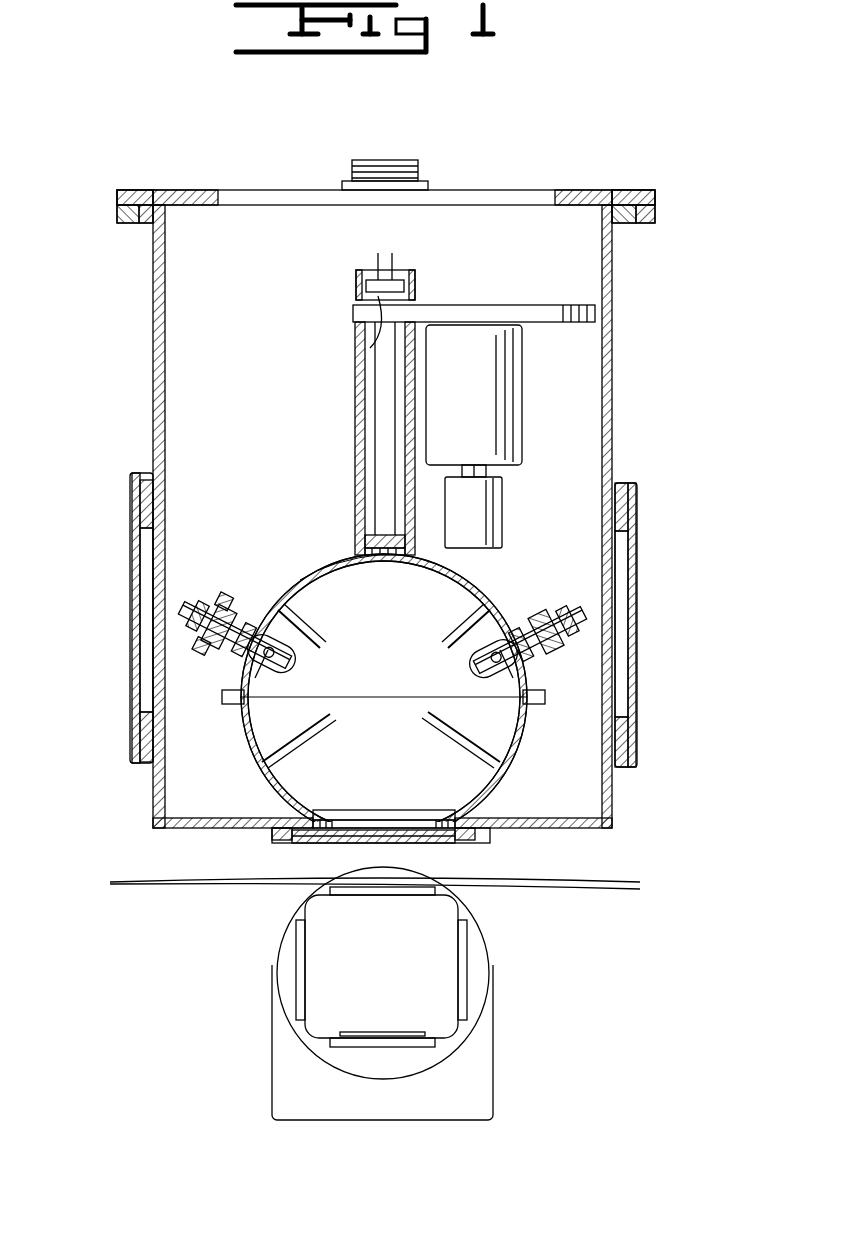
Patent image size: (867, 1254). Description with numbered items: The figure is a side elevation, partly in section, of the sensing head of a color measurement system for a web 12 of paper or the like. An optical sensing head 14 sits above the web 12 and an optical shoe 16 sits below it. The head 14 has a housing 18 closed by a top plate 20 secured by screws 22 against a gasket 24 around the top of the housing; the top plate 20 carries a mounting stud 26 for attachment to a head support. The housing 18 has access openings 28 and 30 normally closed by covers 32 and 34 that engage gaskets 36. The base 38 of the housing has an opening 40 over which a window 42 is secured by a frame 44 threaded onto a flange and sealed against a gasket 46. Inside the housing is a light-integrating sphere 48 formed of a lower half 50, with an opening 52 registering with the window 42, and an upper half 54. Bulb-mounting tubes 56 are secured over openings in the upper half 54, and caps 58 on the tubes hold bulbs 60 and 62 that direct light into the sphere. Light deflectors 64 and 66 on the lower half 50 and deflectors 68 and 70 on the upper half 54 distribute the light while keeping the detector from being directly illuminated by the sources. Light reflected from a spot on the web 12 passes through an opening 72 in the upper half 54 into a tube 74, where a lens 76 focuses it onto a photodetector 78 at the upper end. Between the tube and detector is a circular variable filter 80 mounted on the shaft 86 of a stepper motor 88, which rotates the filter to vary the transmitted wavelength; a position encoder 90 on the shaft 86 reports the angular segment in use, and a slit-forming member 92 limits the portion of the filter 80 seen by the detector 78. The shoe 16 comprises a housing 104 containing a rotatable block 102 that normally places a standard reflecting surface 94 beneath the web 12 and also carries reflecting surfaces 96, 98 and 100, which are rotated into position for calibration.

The web 12 is at (625, 880).
The optical sensing head 14 is at (411, 477).
The optical shoe 16 is at (394, 1023).
The housing 18 is at (615, 315).
The top plate 20 is at (485, 190).
The screws 22 is at (640, 190).
The gasket 24 is at (625, 225).
The mounting stud 26 is at (352, 175).
The access opening 28 is at (133, 540).
The access opening 30 is at (635, 540).
The cover 32 is at (133, 625).
The cover 34 is at (636, 625).
The gaskets 36 is at (140, 515).
The base 38 is at (615, 822).
The opening 40 is at (436, 818).
The window 42 is at (458, 845).
The frame 44 is at (492, 838).
The gasket 46 is at (470, 828).
The light-integrating sphere 48 is at (525, 739).
The lower half 50 is at (270, 800).
The opening 52 is at (362, 820).
The upper half 54 is at (300, 580).
The bulb-mounting tubes 56 is at (225, 680).
The caps 58 is at (238, 596).
The bulb 60 is at (255, 678).
The bulb 62 is at (513, 678).
The light deflector 64 is at (335, 720).
The light deflector 66 is at (450, 735).
The light deflector 68 is at (320, 648).
The light deflector 70 is at (448, 648).
The opening 72 is at (388, 560).
The tube 74 is at (357, 515).
The lens 76 is at (368, 520).
The photodetector 78 is at (415, 285).
The circular variable filter 80 is at (535, 306).
The shaft 86 is at (490, 470).
The stepper motor 88 is at (522, 395).
The position encoder 90 is at (490, 550).
The optical slit-forming member 92 is at (370, 348).
The standard reflecting surface 94 is at (378, 890).
The reflecting surface 96 is at (298, 958).
The reflecting surface 98 is at (350, 1042).
The reflecting surface 100 is at (470, 975).
The rotatable block 102 is at (388, 1030).
The housing 104 is at (285, 940).